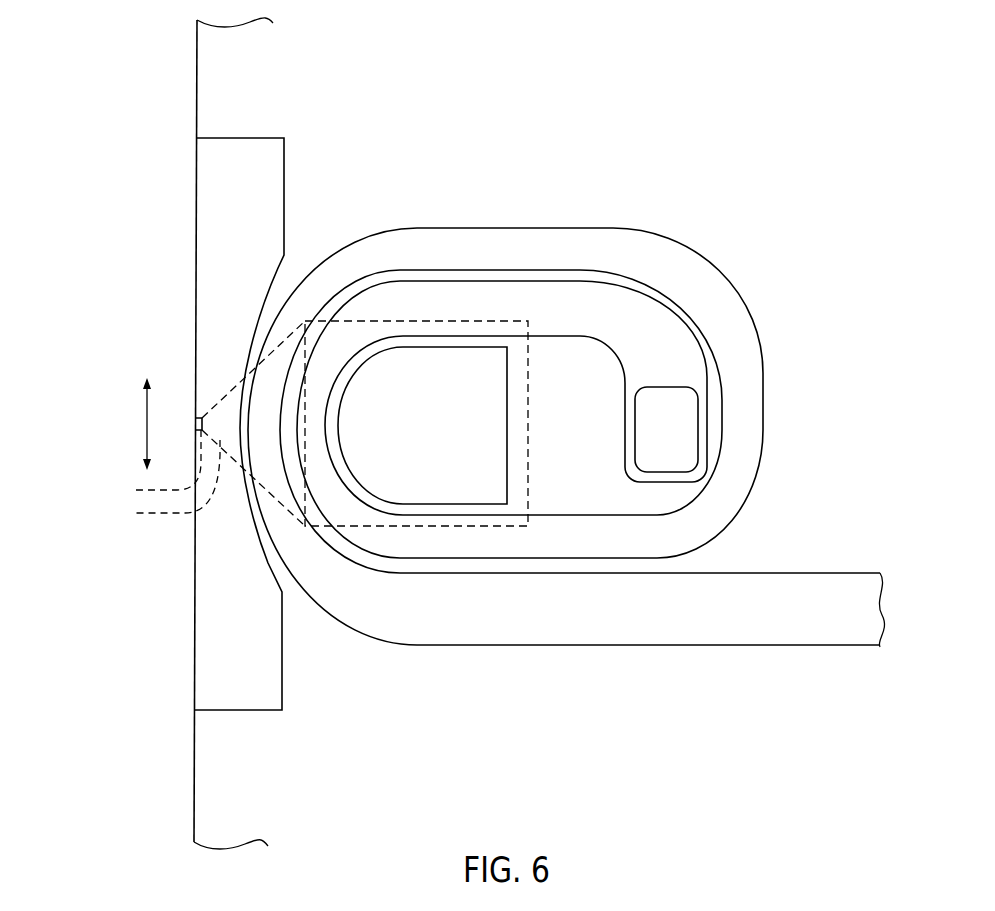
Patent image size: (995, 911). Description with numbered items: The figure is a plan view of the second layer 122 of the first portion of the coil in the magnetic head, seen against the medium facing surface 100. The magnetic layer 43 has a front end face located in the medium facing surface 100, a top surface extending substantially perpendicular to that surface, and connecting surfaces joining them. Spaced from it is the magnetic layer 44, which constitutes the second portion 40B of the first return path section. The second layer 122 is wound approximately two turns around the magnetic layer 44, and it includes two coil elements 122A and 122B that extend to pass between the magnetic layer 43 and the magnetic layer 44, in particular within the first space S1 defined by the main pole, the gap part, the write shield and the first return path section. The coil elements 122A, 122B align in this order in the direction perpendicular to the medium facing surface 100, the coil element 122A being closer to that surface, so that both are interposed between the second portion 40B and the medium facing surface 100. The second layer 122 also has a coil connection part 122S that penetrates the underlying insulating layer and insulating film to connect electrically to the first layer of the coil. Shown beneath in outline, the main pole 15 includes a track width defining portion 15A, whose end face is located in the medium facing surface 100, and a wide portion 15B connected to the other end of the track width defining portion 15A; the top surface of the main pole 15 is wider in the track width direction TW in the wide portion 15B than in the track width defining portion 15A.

The medium facing surface 100 is at (192, 68).
The magnetic layer 43 is at (217, 138).
The magnetic layer 44 is at (423, 320).
The second portion 40B is at (455, 358).
The second layer 122 is at (635, 652).
The coil element 122A is at (263, 426).
The coil element 122B is at (312, 425).
The coil connection part 122S is at (698, 432).
The main pole 15 is at (81, 477).
The track width defining portion 15A is at (144, 466).
The wide portion 15B is at (154, 483).
The first space S1 is at (244, 414).
The track width direction TW is at (129, 424).